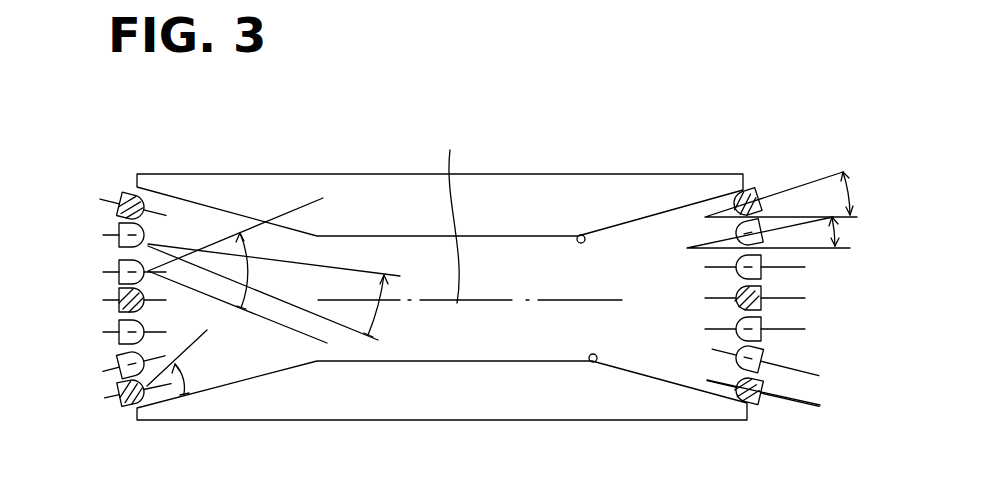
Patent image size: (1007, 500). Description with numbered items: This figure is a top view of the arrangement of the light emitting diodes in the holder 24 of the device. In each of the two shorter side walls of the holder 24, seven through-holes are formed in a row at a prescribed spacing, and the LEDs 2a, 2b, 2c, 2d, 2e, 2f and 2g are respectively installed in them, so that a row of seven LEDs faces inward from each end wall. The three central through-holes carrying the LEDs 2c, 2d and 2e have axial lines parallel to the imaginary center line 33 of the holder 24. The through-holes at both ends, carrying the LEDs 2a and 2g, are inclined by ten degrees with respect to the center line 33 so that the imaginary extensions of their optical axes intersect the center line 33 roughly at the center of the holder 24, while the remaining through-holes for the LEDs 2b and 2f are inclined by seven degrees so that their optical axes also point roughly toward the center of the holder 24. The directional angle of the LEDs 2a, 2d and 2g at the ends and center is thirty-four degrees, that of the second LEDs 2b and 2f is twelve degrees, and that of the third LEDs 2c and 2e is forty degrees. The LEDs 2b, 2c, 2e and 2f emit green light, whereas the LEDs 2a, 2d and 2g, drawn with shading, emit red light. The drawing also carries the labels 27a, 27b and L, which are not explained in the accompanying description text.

The LED 2a is at (125, 198).
The LED 2b is at (118, 230).
The LED 2c is at (118, 268).
The LED 2d is at (118, 296).
The LED 2e is at (118, 330).
The LED 2f is at (120, 365).
The LED 2g is at (118, 391).
The holder 24 is at (625, 160).
The upper boundary point of light guide wall 27a is at (580, 235).
The lower boundary point of light guide wall 27b is at (593, 362).
The imaginary center line 33 is at (446, 214).
The light beam direction L is at (800, 404).